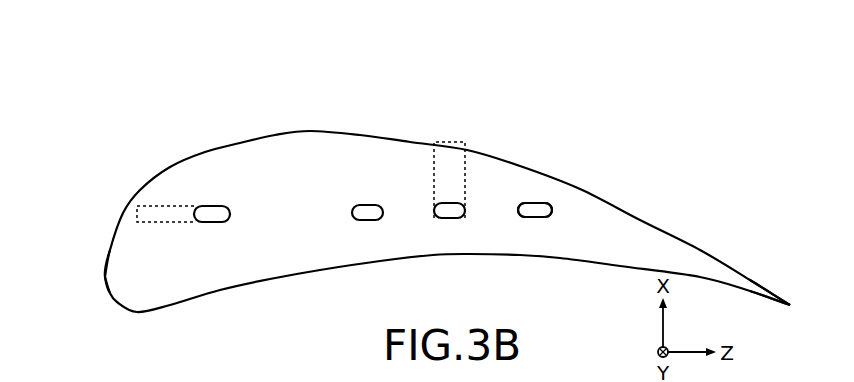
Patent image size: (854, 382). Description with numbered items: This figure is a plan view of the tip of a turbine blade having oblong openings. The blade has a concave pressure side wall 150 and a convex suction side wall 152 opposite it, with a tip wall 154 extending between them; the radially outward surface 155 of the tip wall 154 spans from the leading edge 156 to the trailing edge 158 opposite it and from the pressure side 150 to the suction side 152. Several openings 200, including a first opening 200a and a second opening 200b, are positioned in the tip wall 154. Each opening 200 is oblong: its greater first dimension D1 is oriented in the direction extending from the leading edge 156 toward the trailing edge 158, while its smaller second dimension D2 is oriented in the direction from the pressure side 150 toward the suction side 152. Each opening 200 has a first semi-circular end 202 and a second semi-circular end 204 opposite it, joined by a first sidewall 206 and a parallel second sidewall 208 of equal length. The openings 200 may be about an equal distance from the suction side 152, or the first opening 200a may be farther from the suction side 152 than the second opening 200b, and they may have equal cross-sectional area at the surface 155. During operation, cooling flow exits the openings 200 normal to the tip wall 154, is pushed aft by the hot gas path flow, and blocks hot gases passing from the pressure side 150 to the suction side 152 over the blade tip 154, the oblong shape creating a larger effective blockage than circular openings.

The pressure side wall 150 is at (477, 257).
The suction side wall 152 is at (303, 132).
The tip wall 154 is at (220, 258).
The radially outward surface 155 is at (262, 237).
The leading edge 156 is at (105, 285).
The trailing edge 158 is at (790, 305).
The opening 200 is at (229, 197).
The first opening 200a is at (531, 197).
The second opening 200b is at (379, 196).
The first semi-circular end 202 is at (518, 207).
The second semi-circular end 204 is at (552, 208).
The first sidewall 206 is at (367, 205).
The second sidewall 208 is at (362, 220).
The first dimension D1 is at (450, 142).
The second dimension D2 is at (137, 213).